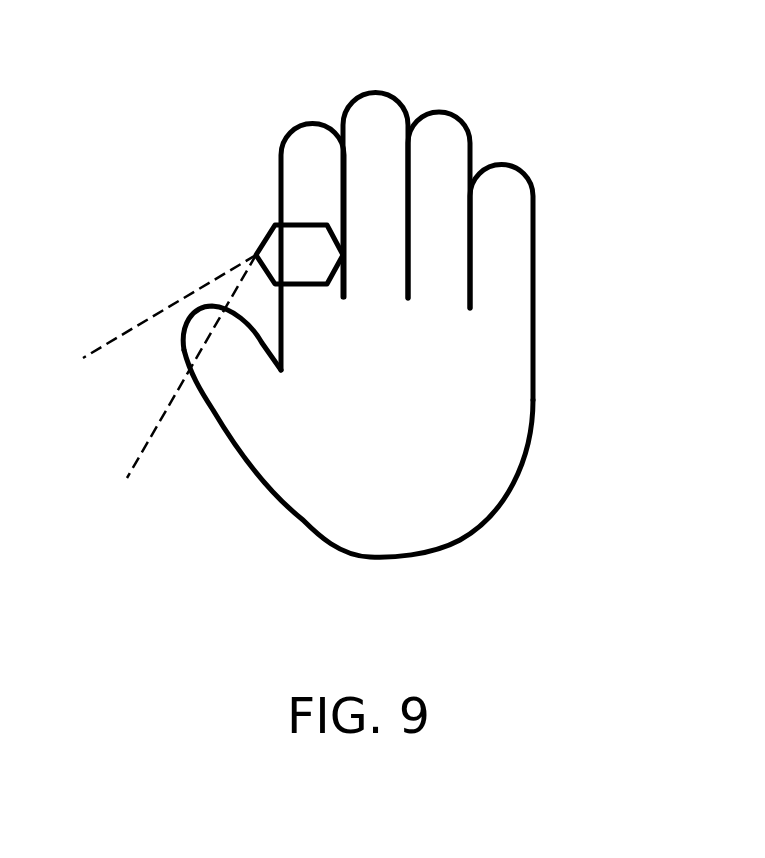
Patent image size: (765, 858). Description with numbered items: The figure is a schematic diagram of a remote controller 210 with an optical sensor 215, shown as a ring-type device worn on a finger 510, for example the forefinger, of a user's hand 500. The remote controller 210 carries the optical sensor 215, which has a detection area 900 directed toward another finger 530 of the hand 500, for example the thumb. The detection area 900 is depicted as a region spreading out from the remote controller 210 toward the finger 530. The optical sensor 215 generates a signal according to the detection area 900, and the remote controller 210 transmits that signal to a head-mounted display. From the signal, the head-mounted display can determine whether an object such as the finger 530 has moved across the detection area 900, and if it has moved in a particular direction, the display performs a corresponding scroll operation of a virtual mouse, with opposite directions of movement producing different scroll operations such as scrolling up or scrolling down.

The hand 500 is at (520, 487).
The finger 510 is at (310, 122).
The finger 530 is at (227, 373).
The remote controller 210 is at (344, 331).
The optical sensor 215 is at (312, 285).
The detection area 900 is at (120, 337).